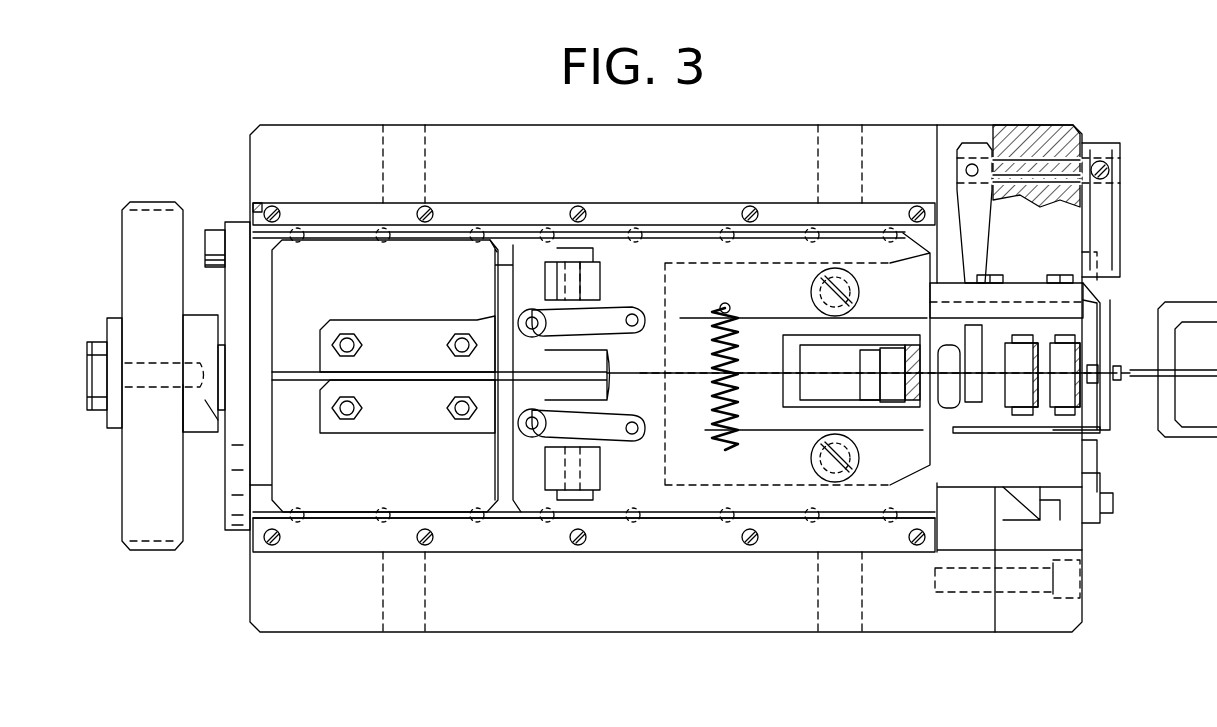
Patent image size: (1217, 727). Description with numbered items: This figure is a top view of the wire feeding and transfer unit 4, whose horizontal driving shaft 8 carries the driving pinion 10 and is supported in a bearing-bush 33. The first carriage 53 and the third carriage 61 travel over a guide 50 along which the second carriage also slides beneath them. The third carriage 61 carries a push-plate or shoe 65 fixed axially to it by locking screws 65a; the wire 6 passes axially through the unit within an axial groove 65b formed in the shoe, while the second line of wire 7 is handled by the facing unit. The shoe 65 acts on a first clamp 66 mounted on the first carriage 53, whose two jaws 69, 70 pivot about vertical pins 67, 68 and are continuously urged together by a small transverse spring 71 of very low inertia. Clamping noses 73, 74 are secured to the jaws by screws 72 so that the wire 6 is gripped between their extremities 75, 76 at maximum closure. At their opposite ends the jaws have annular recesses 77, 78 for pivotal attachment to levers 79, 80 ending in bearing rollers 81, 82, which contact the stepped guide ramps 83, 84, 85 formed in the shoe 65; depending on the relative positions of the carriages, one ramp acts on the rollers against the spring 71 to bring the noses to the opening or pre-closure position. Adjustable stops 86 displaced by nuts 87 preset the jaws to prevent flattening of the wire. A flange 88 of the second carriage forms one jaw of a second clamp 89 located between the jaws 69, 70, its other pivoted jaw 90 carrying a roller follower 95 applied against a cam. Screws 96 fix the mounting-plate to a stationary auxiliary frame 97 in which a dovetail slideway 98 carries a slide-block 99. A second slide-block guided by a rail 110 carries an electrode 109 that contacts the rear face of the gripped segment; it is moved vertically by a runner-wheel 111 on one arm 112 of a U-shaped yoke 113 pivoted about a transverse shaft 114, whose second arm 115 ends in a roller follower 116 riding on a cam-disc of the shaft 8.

The unit 4 is at (321, 112).
The driving pinion 10 is at (145, 196).
The driving shaft 8 is at (220, 420).
The bearing-bush 33 is at (238, 222).
The guide 50 is at (725, 450).
The first carriage 53 is at (525, 505).
The third carriage 61 is at (365, 484).
The push-plate or shoe 65 is at (441, 342).
The locking screws 65a is at (350, 335).
The axial groove 65b is at (300, 320).
The guide ramp 85 is at (498, 310).
The bearing roller 81 is at (533, 305).
The bearing roller 82 is at (520, 445).
The guide ramp 83 is at (590, 343).
The guide ramp 84 is at (590, 380).
The adjustable stops 86 is at (540, 260).
The nuts 87 is at (568, 250).
The lever 79 is at (615, 300).
The annular recess 77 is at (655, 300).
The lever 80 is at (602, 425).
The annular recess 78 is at (650, 420).
The transverse spring 71 is at (690, 360).
The jaw 69 is at (797, 309).
The vertical pin 67 is at (830, 268).
The vertical pin 68 is at (835, 482).
The roller follower 95 is at (800, 372).
The flange 88 is at (912, 405).
The second clamp 89 is at (915, 345).
The jaw 90 is at (840, 420).
The first clamp 66 is at (900, 265).
The wire 6 is at (1120, 370).
The wire 7 is at (1148, 370).
The clamping nose 73 is at (1105, 295).
The extremity 75 is at (1110, 335).
The clamping nose 74 is at (1100, 430).
The extremity 76 is at (1098, 385).
The electrode 109 is at (1092, 400).
The rail 110 is at (1100, 488).
The roller follower 116 is at (952, 470).
The slideway 98 is at (1018, 500).
The slide-block 99 is at (1045, 495).
The screws 96 is at (970, 592).
The stationary auxiliary frame 97 is at (1075, 610).
The second arm 115 is at (975, 205).
The transverse shaft 114 is at (1018, 160).
The U-shaped yoke 113 is at (1110, 140).
The arm 112 is at (1115, 205).
The runner-wheel 111 is at (1097, 265).
The screws 72 is at (990, 275).
The jaw 70 is at (745, 475).